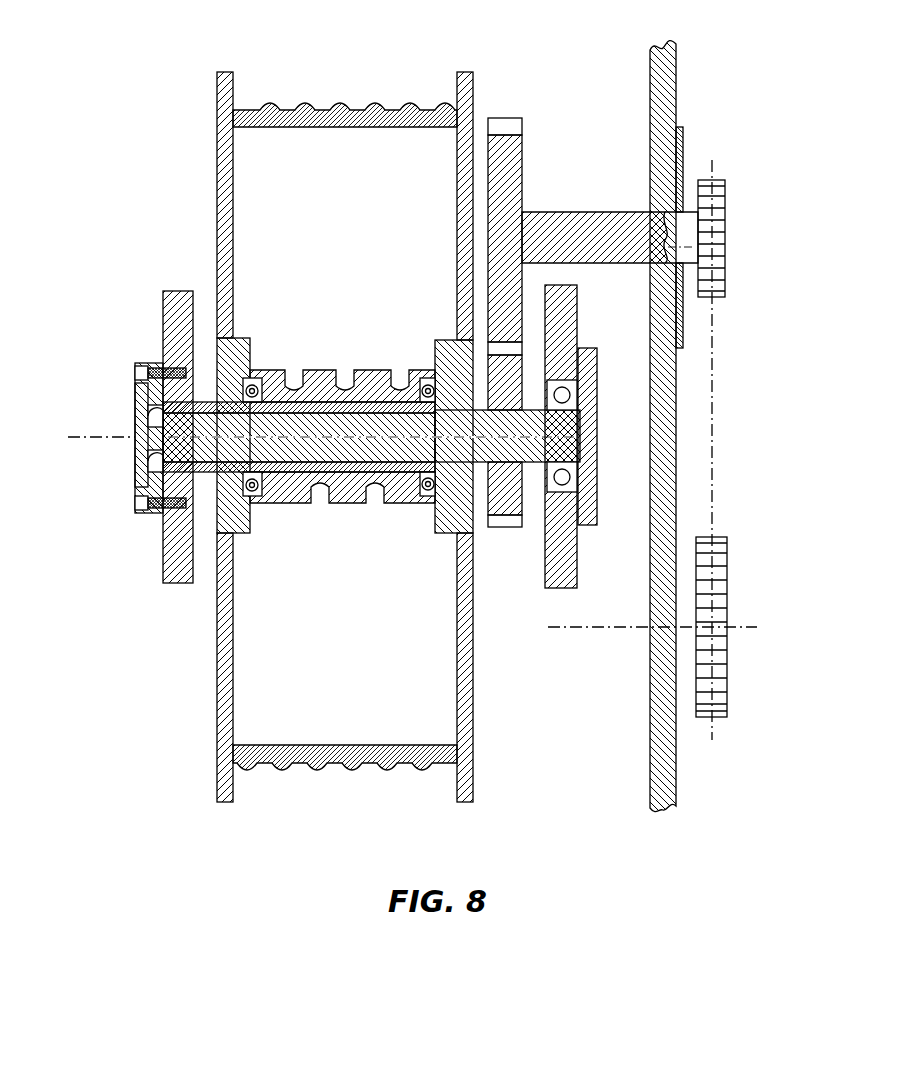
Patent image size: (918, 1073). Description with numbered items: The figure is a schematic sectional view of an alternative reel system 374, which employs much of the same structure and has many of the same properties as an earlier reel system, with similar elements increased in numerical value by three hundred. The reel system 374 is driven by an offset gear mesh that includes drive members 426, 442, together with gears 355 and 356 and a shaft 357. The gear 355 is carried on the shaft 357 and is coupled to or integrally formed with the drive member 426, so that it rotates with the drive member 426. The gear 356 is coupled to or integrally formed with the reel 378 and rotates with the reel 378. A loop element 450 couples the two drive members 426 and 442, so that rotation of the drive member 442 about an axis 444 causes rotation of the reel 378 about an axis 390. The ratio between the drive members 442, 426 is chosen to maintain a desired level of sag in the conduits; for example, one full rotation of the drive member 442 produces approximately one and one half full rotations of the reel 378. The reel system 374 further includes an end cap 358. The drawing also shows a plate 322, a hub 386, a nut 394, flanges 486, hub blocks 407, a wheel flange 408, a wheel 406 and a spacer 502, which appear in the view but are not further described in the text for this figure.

The reel system 374 is at (170, 46).
The gear 355 is at (522, 152).
The gear 356 is at (512, 538).
The shaft 357 is at (588, 212).
The end cap 358 is at (577, 372).
The spacer plate 502 is at (684, 152).
The drive member 426 is at (725, 224).
The drive member 442 is at (728, 608).
The axis 444 is at (590, 632).
The loop element 450 is at (716, 498).
The hub 386 is at (370, 370).
The nut 394 is at (140, 395).
The axis 390 is at (100, 437).
The flange 486 is at (163, 566).
The hub block 407 is at (250, 528).
The wheel flange 408 is at (217, 688).
The wheel 406 is at (217, 787).
The reel 378 is at (324, 784).
The frame plate 322 is at (650, 740).